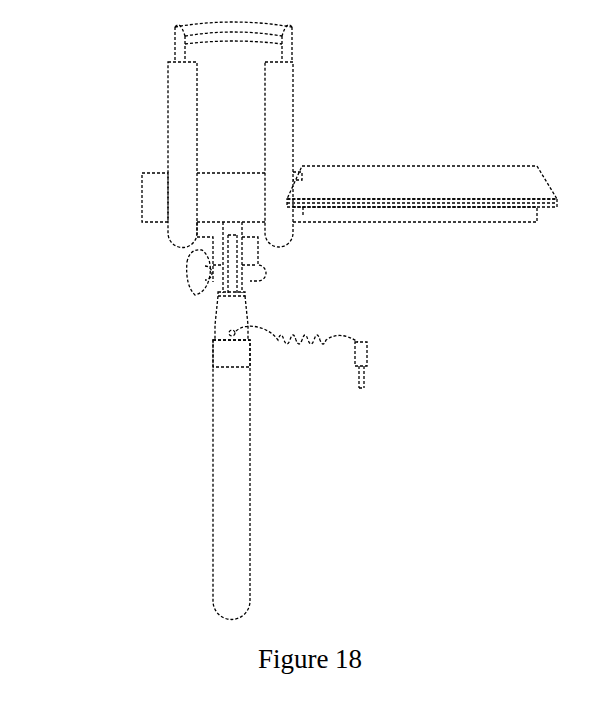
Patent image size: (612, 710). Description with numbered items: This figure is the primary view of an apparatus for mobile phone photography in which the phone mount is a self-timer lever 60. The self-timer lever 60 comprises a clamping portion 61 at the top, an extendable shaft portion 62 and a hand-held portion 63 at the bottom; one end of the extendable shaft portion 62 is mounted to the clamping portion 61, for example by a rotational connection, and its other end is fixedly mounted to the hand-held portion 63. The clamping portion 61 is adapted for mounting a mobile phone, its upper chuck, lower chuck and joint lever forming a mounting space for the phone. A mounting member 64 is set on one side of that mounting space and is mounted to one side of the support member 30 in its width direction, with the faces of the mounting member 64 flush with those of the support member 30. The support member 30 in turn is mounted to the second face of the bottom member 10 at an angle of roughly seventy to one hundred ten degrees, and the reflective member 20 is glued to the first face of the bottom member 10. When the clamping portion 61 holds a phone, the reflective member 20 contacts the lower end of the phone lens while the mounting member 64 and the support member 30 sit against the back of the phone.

The bottom member 10 is at (420, 208).
The reflective member 20 is at (412, 175).
The support member 30 is at (383, 218).
The self-timer lever 60 is at (212, 367).
The clamping portion 61 is at (168, 153).
The extendable shaft portion 62 is at (225, 305).
The hand-held portion 63 is at (225, 507).
The mounting member 64 is at (157, 207).